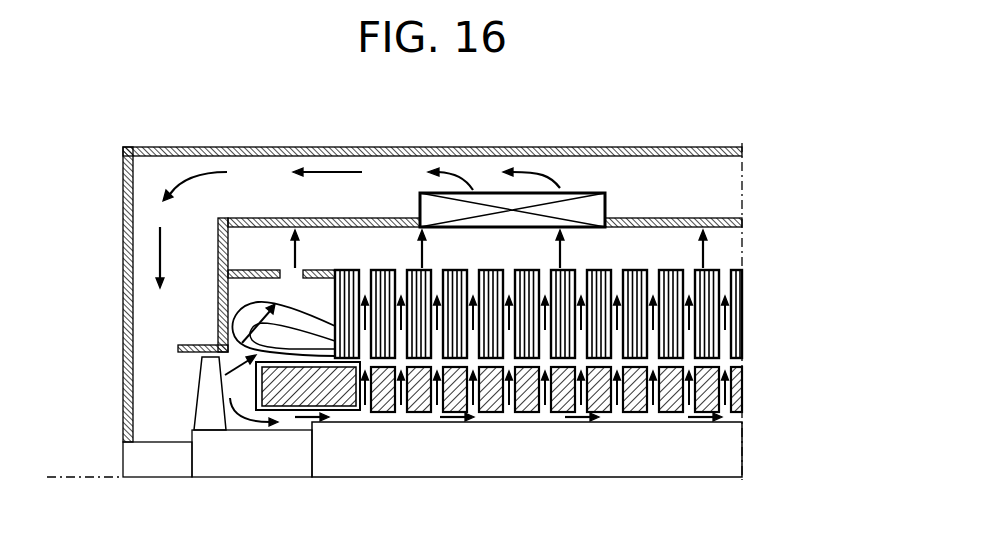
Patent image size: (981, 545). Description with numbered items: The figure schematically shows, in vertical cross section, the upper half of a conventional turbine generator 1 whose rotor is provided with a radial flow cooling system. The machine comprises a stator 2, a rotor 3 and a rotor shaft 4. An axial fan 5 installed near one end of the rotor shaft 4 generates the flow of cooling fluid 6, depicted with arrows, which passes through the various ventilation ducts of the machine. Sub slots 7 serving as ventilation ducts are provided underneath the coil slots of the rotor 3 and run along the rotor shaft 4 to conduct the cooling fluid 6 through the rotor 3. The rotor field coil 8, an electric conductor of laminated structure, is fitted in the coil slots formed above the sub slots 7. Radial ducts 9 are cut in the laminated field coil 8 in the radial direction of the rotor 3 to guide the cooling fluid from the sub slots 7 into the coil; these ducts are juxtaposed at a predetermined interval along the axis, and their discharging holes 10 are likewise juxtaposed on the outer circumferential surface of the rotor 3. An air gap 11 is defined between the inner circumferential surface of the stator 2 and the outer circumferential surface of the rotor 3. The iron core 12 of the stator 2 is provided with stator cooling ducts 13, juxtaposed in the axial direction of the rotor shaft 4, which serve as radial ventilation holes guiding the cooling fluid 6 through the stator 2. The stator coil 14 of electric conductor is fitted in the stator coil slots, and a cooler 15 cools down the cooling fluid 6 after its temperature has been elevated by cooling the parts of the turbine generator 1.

The turbine generator 1 is at (247, 148).
The stator 2 is at (558, 293).
The rotor 3 is at (499, 446).
The rotor shaft 4 is at (388, 460).
The axial fan 5 is at (201, 403).
The cooling fluid 6 is at (232, 400).
The sub slots 7 is at (505, 413).
The rotor field coil 8 is at (558, 413).
The radial ducts 9 is at (612, 413).
The discharging holes 10 is at (672, 413).
The air gap 11 is at (735, 362).
The iron core 12 is at (348, 271).
The stator cooling ducts 13 is at (468, 275).
The stator coil 14 is at (296, 323).
The cooler 15 is at (570, 198).